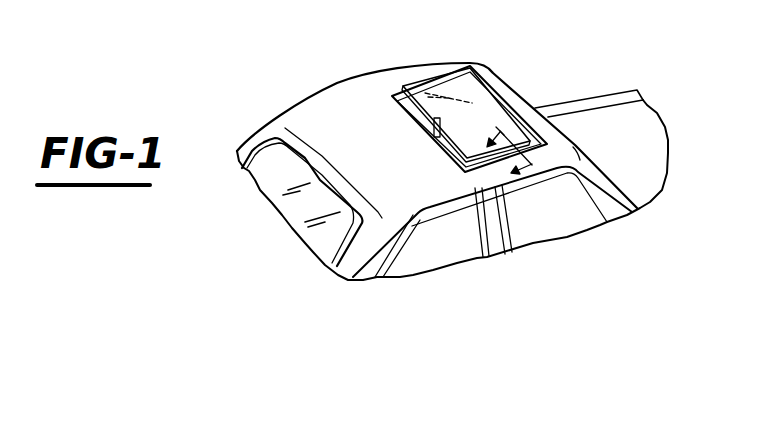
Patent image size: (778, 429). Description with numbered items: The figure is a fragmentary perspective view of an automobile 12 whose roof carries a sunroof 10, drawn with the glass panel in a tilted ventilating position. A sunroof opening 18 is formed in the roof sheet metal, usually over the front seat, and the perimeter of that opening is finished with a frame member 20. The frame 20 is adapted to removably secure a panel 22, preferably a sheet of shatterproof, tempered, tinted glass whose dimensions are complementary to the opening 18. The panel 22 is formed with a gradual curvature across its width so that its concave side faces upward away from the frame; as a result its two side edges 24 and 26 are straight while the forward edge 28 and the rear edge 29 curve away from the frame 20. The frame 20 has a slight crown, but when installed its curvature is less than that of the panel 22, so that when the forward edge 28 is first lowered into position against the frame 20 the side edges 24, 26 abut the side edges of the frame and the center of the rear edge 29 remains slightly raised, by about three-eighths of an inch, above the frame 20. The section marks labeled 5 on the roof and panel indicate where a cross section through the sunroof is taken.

The sunroof 10 is at (452, 55).
The automobile 12 is at (307, 72).
The sunroof opening 18 is at (447, 165).
The frame member 20 is at (468, 173).
The panel 22 is at (473, 92).
The side edge 24 is at (487, 157).
The side edge 26 is at (425, 82).
The forward edge 28 is at (502, 104).
The rear edge 29 is at (434, 137).
The section line 5- 5 is at (502, 165).